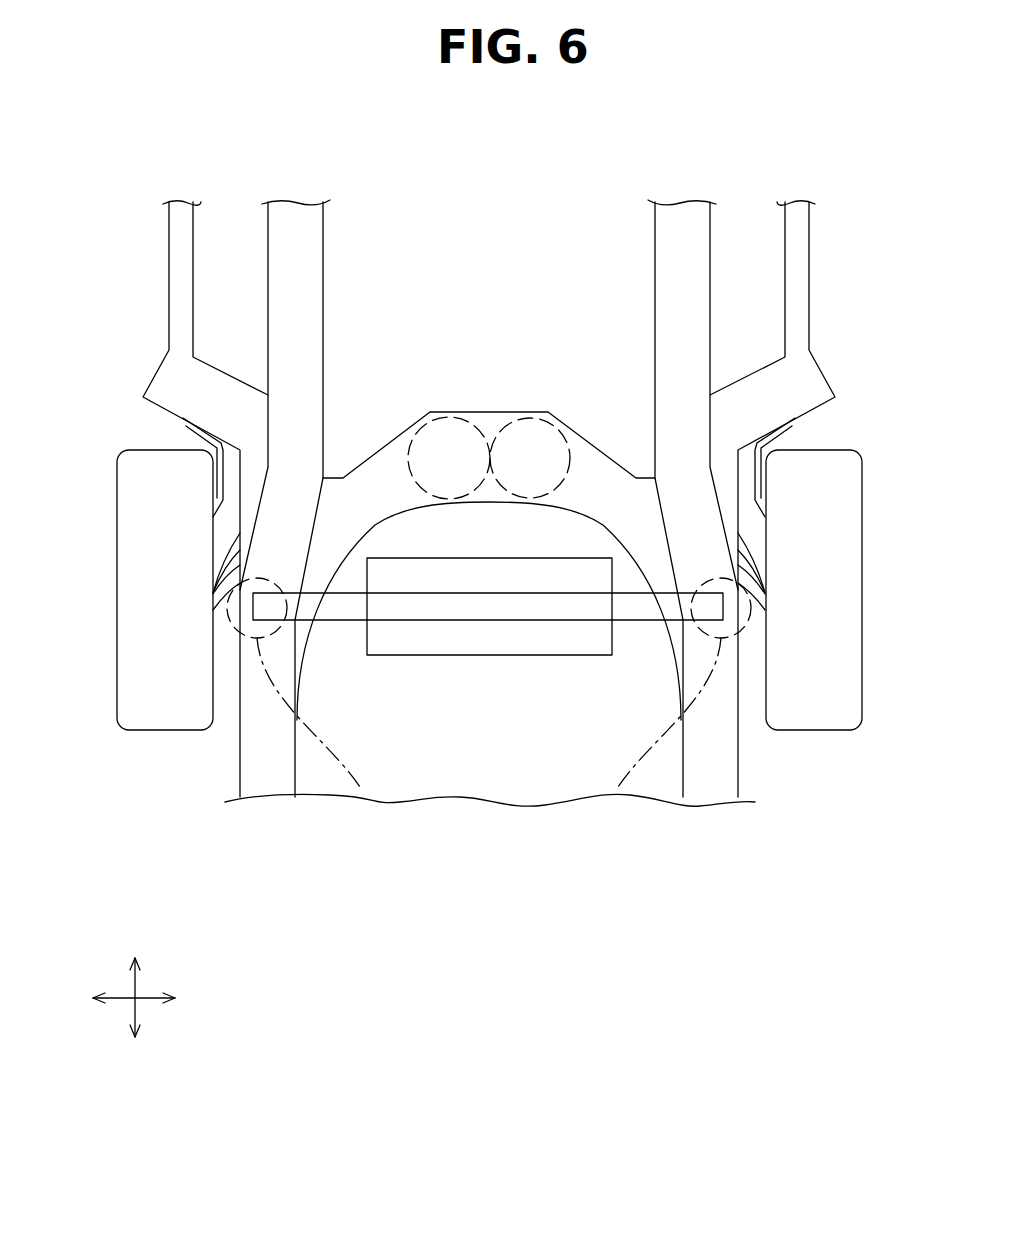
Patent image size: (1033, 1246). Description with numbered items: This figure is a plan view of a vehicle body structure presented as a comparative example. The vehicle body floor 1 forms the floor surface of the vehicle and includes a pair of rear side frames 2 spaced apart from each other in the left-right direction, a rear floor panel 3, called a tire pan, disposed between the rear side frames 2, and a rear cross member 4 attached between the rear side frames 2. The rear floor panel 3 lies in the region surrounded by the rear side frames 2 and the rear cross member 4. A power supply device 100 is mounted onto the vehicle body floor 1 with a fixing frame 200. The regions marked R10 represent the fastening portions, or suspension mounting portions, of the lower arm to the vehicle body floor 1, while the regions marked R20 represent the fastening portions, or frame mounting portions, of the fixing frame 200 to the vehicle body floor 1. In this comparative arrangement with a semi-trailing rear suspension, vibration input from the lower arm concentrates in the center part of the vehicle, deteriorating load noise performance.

The vehicle body floor 1 is at (619, 159).
The rear side frame 2 is at (268, 778).
The rear floor panel 3 is at (447, 777).
The rear cross member 4 is at (553, 412).
The power supply device 100 is at (473, 665).
The fixing frame 200 is at (563, 628).
The fastening portion of the lower arm R10 is at (505, 425).
The fastening portion of the fixing frame R20 is at (362, 793).